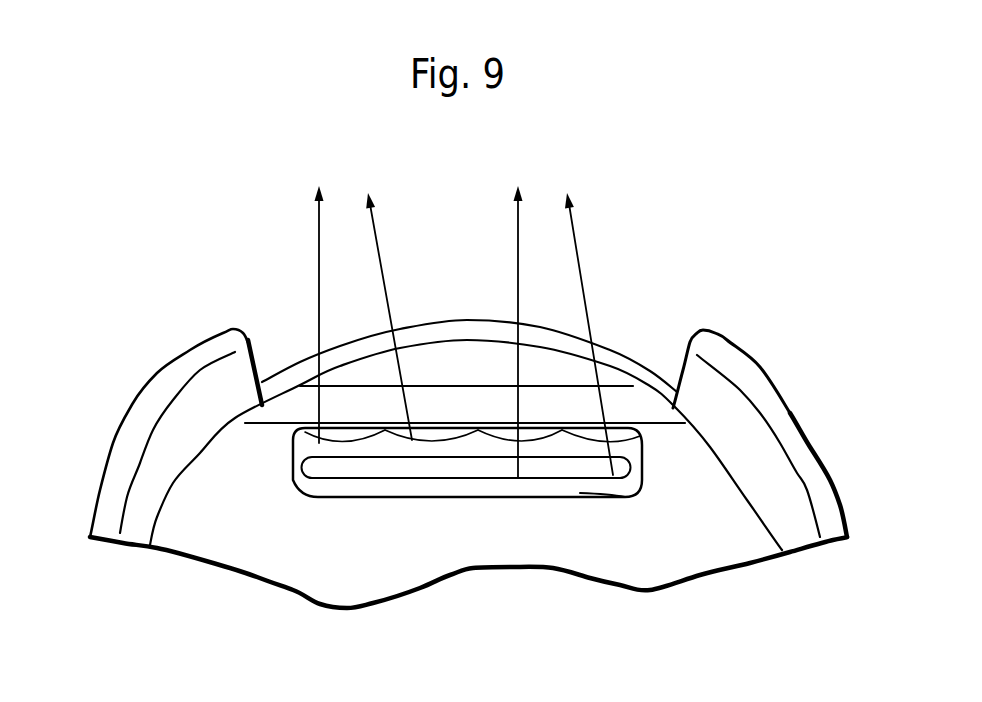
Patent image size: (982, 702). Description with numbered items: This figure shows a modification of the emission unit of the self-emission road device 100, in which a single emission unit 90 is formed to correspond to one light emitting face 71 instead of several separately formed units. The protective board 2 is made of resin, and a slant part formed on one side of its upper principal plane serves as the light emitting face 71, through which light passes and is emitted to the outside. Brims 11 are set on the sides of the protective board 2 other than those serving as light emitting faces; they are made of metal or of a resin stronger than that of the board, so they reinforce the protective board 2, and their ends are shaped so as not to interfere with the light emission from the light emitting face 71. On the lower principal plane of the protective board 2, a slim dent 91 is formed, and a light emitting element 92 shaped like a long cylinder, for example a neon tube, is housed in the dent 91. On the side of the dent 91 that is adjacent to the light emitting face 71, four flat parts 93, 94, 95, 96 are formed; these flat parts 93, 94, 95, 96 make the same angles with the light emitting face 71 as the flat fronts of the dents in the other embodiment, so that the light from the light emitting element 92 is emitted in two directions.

The lighting device 100 is at (473, 406).
The protective board 2 is at (700, 545).
The brim 11 is at (128, 471).
The light emitting face 71 is at (633, 407).
The emission unit 90 is at (483, 476).
The dent 91 is at (587, 492).
The light emitting element 92 is at (420, 470).
The flat part 93 is at (330, 433).
The flat part 94 is at (423, 433).
The flat part 95 is at (527, 433).
The flat part 96 is at (632, 433).